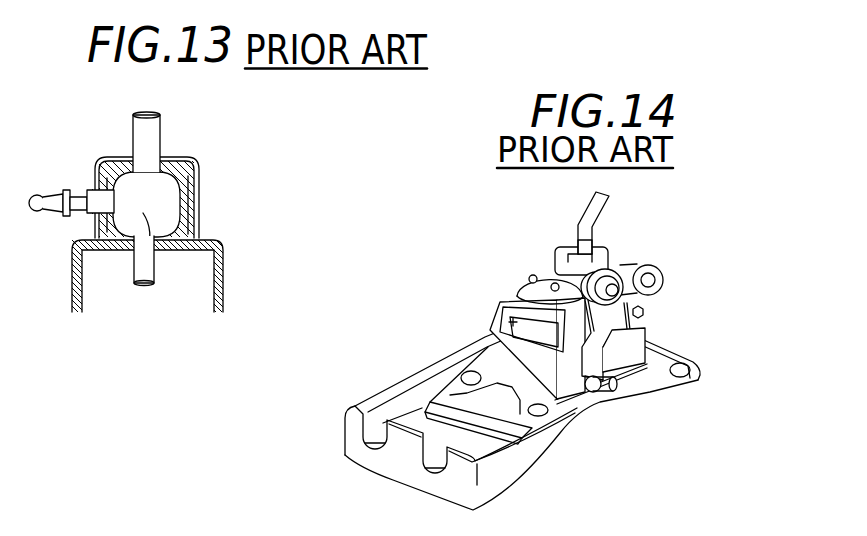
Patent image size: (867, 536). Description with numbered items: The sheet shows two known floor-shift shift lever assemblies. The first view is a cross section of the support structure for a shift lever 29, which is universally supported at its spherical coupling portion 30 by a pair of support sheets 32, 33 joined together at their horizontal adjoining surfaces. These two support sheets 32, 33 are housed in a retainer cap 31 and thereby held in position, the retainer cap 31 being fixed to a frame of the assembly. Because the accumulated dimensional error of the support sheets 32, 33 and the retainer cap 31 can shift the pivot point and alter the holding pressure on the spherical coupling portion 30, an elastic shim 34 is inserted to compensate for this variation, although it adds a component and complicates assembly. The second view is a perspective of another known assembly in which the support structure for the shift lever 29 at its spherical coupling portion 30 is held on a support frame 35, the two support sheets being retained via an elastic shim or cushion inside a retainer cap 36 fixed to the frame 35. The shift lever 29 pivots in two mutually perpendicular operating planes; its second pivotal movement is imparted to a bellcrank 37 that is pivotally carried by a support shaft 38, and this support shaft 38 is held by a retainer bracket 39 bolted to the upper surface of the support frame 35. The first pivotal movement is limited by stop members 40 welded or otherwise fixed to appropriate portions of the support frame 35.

In FIG. 13, the shift lever 29 is at (150, 132).
In FIG. 14, the shift lever 29 is at (596, 222).
In FIG. 13, the spherical coupling portion 30 is at (147, 217).
In FIG. 14, the spherical coupling portion 30 is at (578, 249).
In FIG. 13, the retainer cap 31 is at (192, 158).
In FIG. 13, the support sheet 32 is at (192, 178).
In FIG. 13, the support sheet 33 is at (190, 220).
In FIG. 13, the elastic shim 34 is at (111, 243).
In FIG. 14, the support frame 35 is at (505, 303).
In FIG. 14, the retainer cap 36 is at (608, 262).
In FIG. 14, the bellcrank 37 is at (609, 336).
In FIG. 14, the support shaft 38 is at (655, 284).
In FIG. 14, the retainer bracket 39 is at (521, 279).
In FIG. 14, the stop members 40 is at (507, 322).